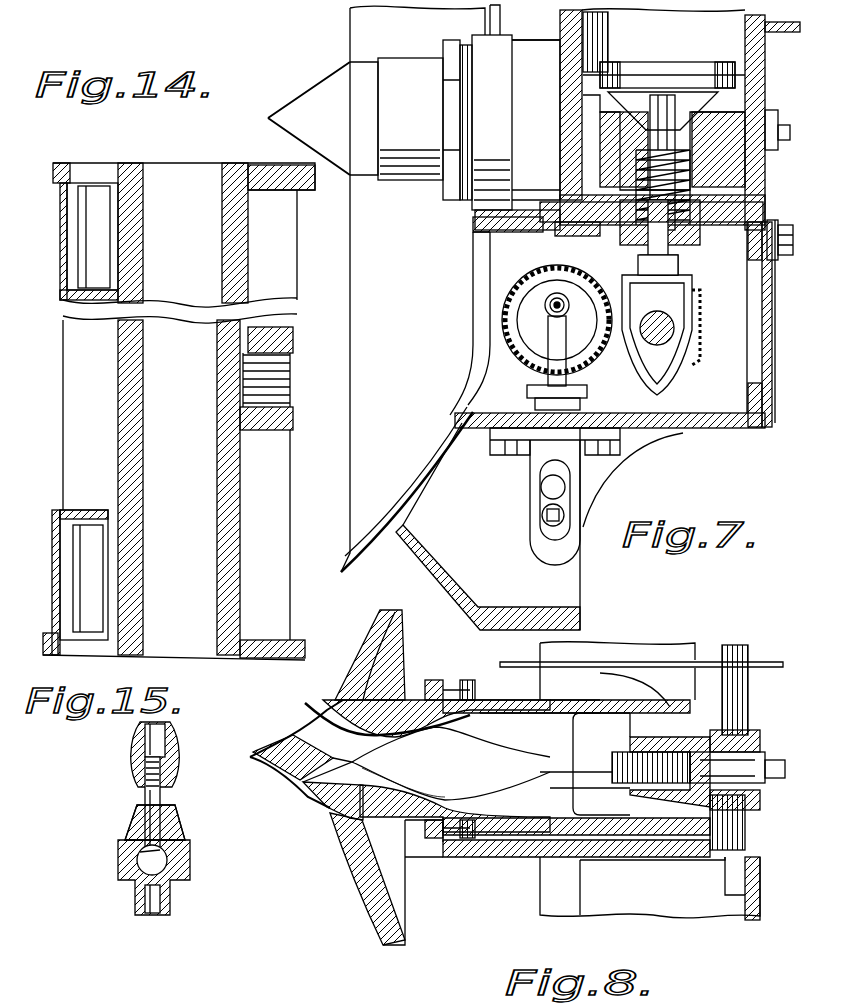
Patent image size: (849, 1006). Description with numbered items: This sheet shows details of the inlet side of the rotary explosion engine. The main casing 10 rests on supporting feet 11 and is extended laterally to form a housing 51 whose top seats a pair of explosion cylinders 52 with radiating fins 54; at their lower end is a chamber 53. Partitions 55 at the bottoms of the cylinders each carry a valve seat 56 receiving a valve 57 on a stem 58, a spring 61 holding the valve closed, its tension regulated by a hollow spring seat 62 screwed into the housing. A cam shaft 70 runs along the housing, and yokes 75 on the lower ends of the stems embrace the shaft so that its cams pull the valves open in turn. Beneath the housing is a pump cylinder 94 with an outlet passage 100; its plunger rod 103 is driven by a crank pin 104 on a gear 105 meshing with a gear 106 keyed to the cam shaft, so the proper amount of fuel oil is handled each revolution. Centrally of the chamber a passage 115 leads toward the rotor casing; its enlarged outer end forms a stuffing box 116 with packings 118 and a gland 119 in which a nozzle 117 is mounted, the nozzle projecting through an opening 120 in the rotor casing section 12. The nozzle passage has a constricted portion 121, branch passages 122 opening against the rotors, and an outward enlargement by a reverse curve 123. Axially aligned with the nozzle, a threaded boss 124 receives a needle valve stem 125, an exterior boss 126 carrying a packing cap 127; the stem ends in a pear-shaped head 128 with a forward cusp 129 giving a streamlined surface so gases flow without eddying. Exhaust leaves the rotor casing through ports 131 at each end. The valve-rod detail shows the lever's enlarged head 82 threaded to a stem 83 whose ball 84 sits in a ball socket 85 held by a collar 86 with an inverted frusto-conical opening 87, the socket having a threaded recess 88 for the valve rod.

In FIG. 7, the main casing 10 is at (396, 552).
In FIG. 7, the supporting feet 11 is at (560, 622).
In FIG. 14, the upper section of rotor casing 12 is at (272, 500).
In FIG. 7, the housing 51 is at (727, 418).
In FIG. 7, the explosion cylinders 52 is at (664, 104).
In FIG. 8, the explosion cylinders 52 is at (712, 655).
In FIG. 7, the chamber 53 is at (730, 95).
In FIG. 8, the chamber 53 is at (630, 730).
In FIG. 7, the radiating fins 54 is at (495, 10).
In FIG. 8, the radiating fins 54 is at (650, 660).
In FIG. 7, the partitions 55 is at (592, 60).
In FIG. 7, the valve seat 56 is at (664, 50).
In FIG. 7, the valve 57 is at (642, 84).
In FIG. 7, the stem 58 is at (665, 196).
In FIG. 7, the spring 61 is at (682, 216).
In FIG. 7, the hollow spring seat 62 is at (608, 232).
In FIG. 7, the cam shaft 70 is at (660, 332).
In FIG. 7, the yokes 75 is at (686, 306).
In FIG. 15, the enlarged head 82 is at (130, 752).
In FIG. 15, the stem 83 is at (140, 795).
In FIG. 15, the ball 84 is at (172, 845).
In FIG. 15, the ball socket 85 is at (188, 873).
In FIG. 15, the collar 86 is at (135, 840).
In FIG. 15, the inverted frusto-conical opening 87 is at (170, 812).
In FIG. 15, the threaded recess 88 is at (165, 900).
In FIG. 7, the pump cylinder 94 is at (588, 487).
In FIG. 7, the outlet passage 100 is at (544, 487).
In FIG. 7, the rod 103 is at (552, 355).
In FIG. 7, the crank pin 104 is at (550, 306).
In FIG. 7, the gear 105 is at (552, 298).
In FIG. 7, the gear 106 is at (678, 334).
In FIG. 7, the passage 115 is at (585, 152).
In FIG. 8, the passage 115 is at (545, 728).
In FIG. 7, the stuffing box 116 is at (490, 57).
In FIG. 8, the stuffing box 116 is at (460, 700).
In FIG. 7, the nozzle 117 is at (410, 119).
In FIG. 8, the nozzle 117 is at (408, 698).
In FIG. 8, the packings 118 is at (472, 698).
In FIG. 7, the gland 119 is at (450, 172).
In FIG. 8, the gland 119 is at (436, 840).
In FIG. 14, the opening 120 is at (240, 375).
In FIG. 8, the opening 120 is at (337, 698).
In FIG. 8, the constricted portion 121 is at (358, 850).
In FIG. 8, the branch passages 122 is at (322, 724).
In FIG. 8, the reverse curve 123 is at (512, 712).
In FIG. 8, the threaded boss 124 is at (650, 790).
In FIG. 8, the needle valve stem 125 is at (668, 792).
In FIG. 8, the boss 126 is at (720, 812).
In FIG. 8, the packing cap 127 is at (740, 806).
In FIG. 8, the head 128 is at (470, 770).
In FIG. 8, the cusp 129 is at (322, 745).
In FIG. 14, the exhaust ports 131 is at (98, 195).